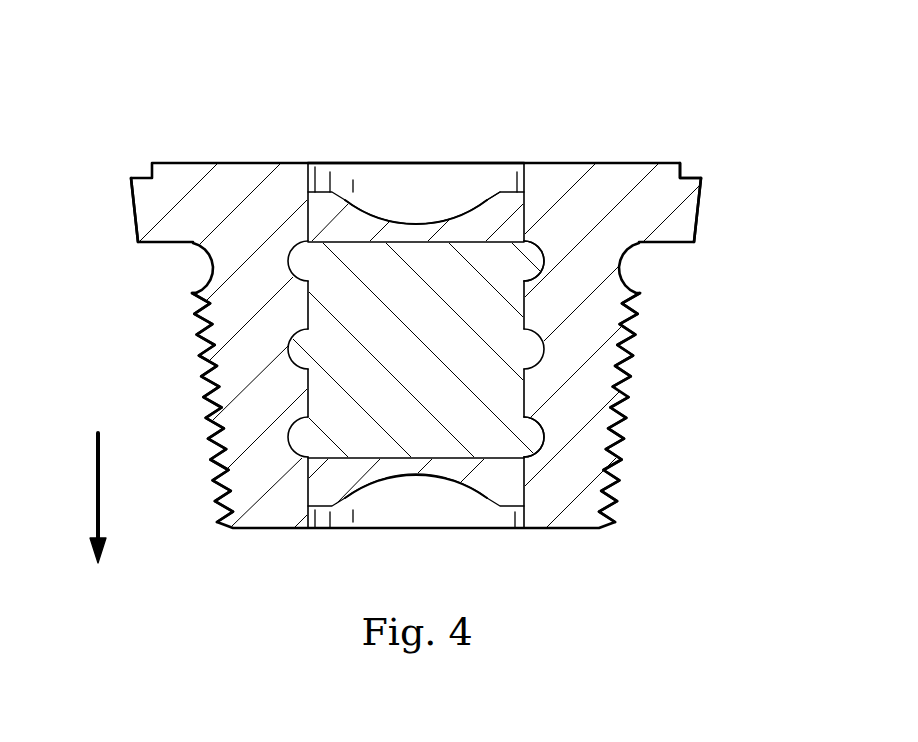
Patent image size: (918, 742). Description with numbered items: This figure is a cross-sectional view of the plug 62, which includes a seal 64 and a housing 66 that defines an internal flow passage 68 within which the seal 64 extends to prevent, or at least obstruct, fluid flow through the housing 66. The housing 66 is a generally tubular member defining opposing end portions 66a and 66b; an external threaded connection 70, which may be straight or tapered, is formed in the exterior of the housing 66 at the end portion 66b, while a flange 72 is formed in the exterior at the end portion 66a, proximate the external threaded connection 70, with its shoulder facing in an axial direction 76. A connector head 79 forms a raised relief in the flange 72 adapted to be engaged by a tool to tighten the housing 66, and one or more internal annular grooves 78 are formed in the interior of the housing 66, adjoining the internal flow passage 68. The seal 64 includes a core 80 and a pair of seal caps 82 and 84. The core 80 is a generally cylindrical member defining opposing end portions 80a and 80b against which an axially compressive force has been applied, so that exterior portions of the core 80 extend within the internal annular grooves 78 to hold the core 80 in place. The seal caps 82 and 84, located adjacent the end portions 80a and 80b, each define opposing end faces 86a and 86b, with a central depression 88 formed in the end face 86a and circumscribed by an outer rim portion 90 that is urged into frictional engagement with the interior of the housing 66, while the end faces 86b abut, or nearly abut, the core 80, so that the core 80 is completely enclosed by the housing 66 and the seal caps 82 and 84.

The plug 62 is at (112, 86).
The seal 64 is at (475, 188).
The housing 66 is at (650, 347).
The end portion 66a is at (706, 207).
The end portion 66b is at (631, 503).
The internal flow passage 68 is at (411, 181).
The external threaded connection 70 is at (207, 432).
The flange 72 is at (135, 212).
The axial direction 76 is at (95, 488).
The internal annular grooves 78 is at (318, 268).
The connector head 79 is at (692, 174).
The core 80 is at (428, 362).
The end portion 80a is at (292, 246).
The end portion 80b is at (300, 443).
The seal cap 82 is at (362, 198).
The seal cap 84 is at (388, 482).
The end face 86a is at (510, 190).
The end face 86b is at (535, 258).
The central depression 88 is at (387, 200).
The outer rim portion 90 is at (317, 167).